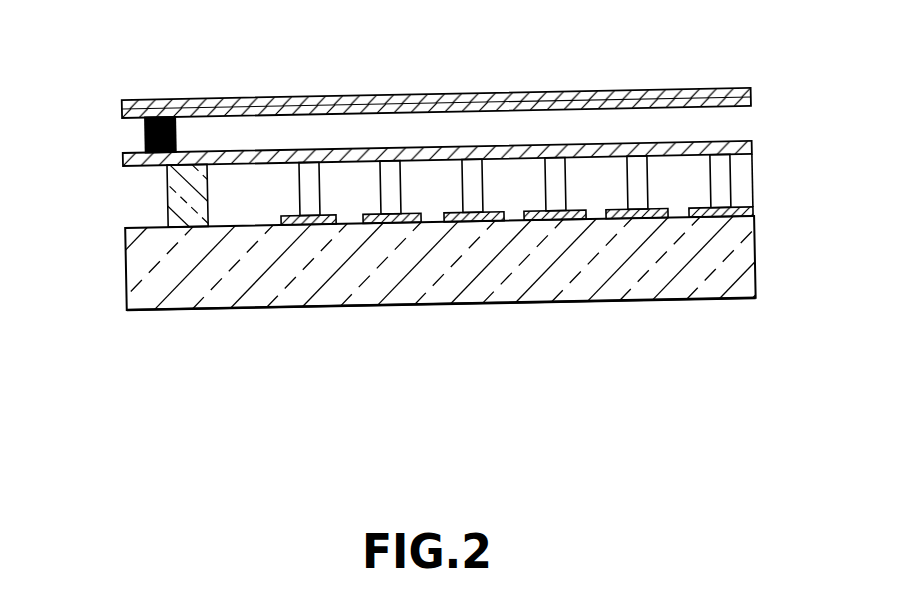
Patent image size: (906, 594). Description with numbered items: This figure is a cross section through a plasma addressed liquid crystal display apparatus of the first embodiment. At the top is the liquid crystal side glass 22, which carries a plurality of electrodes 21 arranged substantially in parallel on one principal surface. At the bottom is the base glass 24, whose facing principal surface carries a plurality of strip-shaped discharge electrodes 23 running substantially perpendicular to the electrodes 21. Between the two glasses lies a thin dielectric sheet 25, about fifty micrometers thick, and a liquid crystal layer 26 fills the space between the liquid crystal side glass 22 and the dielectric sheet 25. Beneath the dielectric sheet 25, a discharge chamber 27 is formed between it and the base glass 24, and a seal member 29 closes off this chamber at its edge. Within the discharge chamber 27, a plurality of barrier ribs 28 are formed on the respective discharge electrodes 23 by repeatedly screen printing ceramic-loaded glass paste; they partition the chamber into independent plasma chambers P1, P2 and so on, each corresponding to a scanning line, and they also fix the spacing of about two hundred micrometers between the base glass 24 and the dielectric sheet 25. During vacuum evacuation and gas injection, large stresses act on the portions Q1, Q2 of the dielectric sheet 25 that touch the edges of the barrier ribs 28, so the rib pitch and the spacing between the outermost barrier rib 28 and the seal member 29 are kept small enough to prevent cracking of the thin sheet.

The electrodes 21 is at (742, 102).
The liquid crystal side glass 22 is at (123, 105).
The discharge electrodes 23 is at (472, 224).
The base glass 24 is at (727, 253).
The dielectric sheet 25 is at (123, 160).
The liquid crystal layer 26 is at (733, 123).
The discharge chamber 27 is at (740, 180).
The barrier ribs 28 is at (548, 185).
The seal member 29 is at (167, 190).
The plasma chamber P1 is at (349, 205).
The plasma chamber P2 is at (433, 193).
The portion of the dielectric sheet Q1 is at (322, 152).
The portion of the dielectric sheet Q2 is at (378, 150).